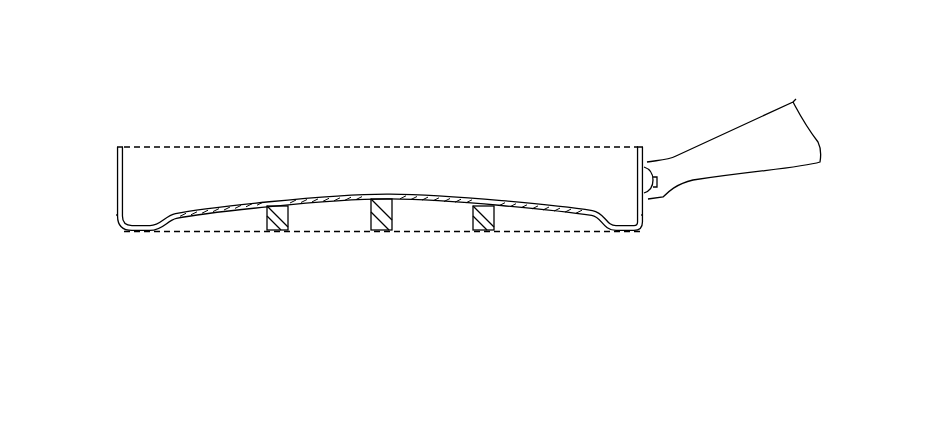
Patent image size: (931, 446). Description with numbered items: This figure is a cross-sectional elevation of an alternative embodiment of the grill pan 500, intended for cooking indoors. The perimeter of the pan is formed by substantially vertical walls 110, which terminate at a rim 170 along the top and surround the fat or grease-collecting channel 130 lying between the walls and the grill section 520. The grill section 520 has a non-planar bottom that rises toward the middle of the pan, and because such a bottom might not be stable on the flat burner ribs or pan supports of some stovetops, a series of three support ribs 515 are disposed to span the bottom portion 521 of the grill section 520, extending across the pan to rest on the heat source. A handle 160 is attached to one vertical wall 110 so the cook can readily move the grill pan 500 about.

The grill pan 500 is at (566, 98).
The vertical wall 110 is at (117, 174).
The grease-collecting channel 130 is at (131, 223).
The rim 170 is at (120, 146).
The handle 160 is at (720, 134).
The support rib 515 is at (272, 233).
The grill section 520 is at (416, 188).
The bottom portion 521 is at (557, 236).